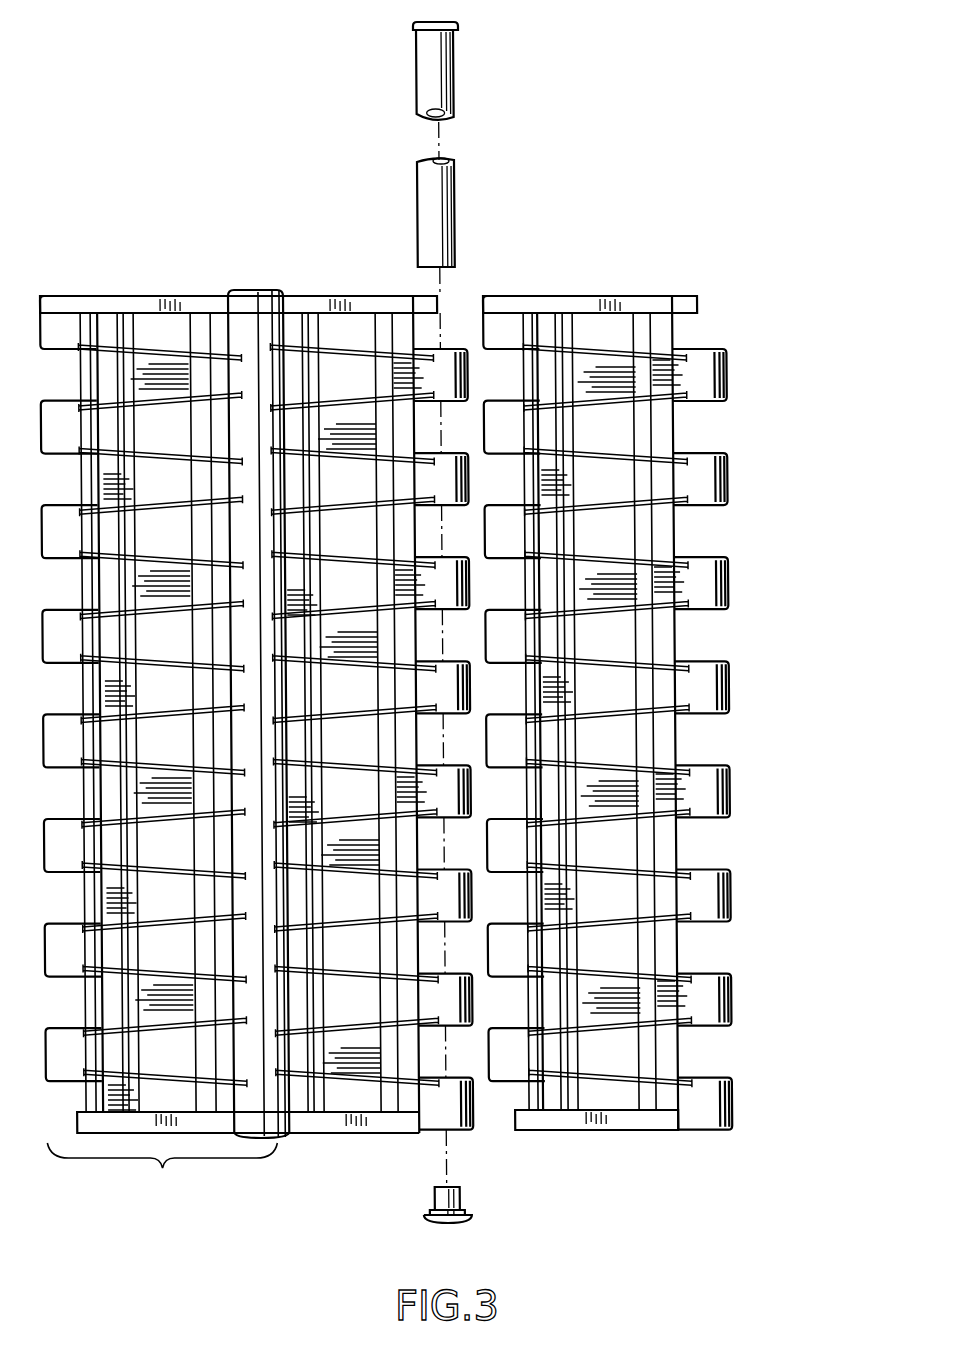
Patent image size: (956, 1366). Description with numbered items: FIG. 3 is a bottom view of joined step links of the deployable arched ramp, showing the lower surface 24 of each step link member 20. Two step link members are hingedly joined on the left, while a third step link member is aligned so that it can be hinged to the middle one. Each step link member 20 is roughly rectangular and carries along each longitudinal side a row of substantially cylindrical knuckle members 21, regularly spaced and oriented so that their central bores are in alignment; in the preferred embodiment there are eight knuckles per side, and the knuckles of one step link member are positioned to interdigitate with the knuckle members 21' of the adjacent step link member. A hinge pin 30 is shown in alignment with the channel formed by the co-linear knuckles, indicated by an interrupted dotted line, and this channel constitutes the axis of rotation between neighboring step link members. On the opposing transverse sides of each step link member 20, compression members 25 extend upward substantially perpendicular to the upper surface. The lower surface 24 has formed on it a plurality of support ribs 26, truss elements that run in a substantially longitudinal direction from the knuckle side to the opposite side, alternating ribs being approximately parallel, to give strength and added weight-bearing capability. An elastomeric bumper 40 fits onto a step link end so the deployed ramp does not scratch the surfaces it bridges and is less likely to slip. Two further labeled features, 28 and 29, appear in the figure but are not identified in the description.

The step link member 20 is at (257, 745).
The knuckle member 21 is at (744, 375).
The knuckle member of adjacent step link member 21' is at (632, 531).
The lower surface 24 is at (615, 325).
The compression member 25 is at (147, 305).
The support rib 26 is at (565, 337).
The hinge eye opening 28 is at (524, 1086).
The adjacent conveyor belt module 29 is at (694, 1044).
The hinge pin 30 is at (445, 87).
The elastomeric bumper 40 is at (433, 1195).